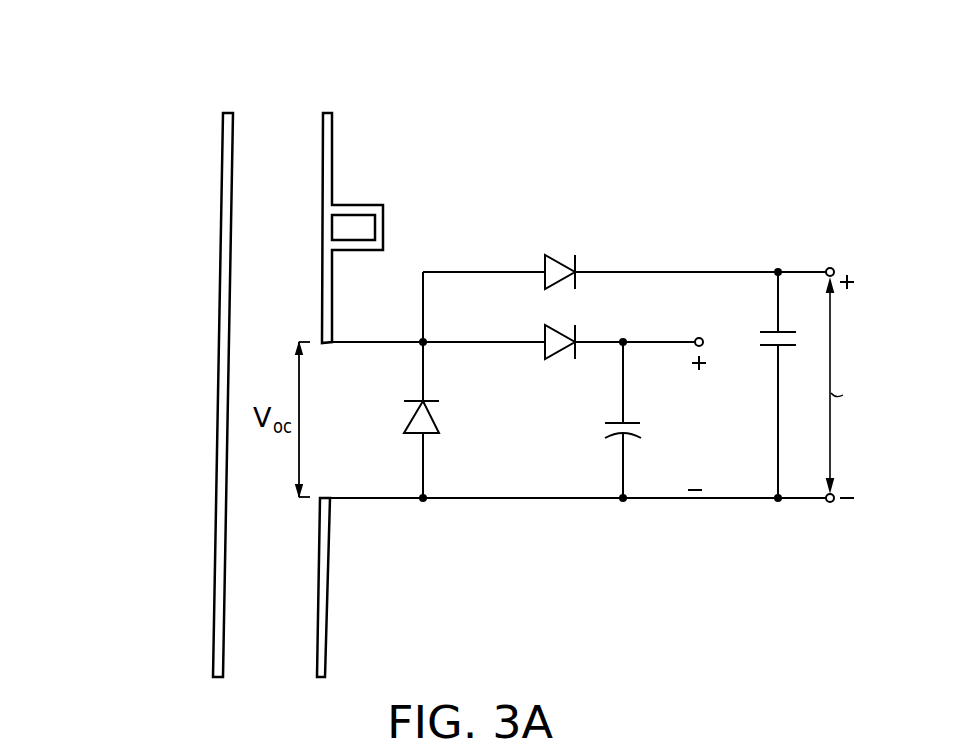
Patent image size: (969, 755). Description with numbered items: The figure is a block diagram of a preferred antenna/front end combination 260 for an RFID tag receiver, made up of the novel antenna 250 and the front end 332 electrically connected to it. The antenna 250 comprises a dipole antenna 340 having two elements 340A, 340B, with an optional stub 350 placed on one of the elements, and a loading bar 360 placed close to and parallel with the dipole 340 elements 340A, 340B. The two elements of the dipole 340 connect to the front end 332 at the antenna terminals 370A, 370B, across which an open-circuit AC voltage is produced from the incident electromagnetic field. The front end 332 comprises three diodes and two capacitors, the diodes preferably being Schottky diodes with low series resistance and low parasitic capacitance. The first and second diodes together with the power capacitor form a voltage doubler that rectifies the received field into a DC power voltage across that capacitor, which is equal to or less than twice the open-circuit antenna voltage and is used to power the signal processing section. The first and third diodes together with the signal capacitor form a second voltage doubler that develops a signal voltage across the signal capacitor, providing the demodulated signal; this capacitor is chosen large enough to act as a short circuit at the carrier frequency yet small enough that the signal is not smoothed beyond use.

The antenna/front end combination 260 is at (845, 52).
The antenna 250 is at (363, 108).
The loading bar 360 is at (217, 540).
The dipole antenna 340 is at (325, 645).
The dipole element 340A is at (315, 660).
The dipole element 340B is at (333, 152).
The stub 350 is at (385, 220).
The antenna terminal 370A is at (370, 343).
The antenna terminal 370B is at (377, 496).
The front end 332 is at (818, 523).